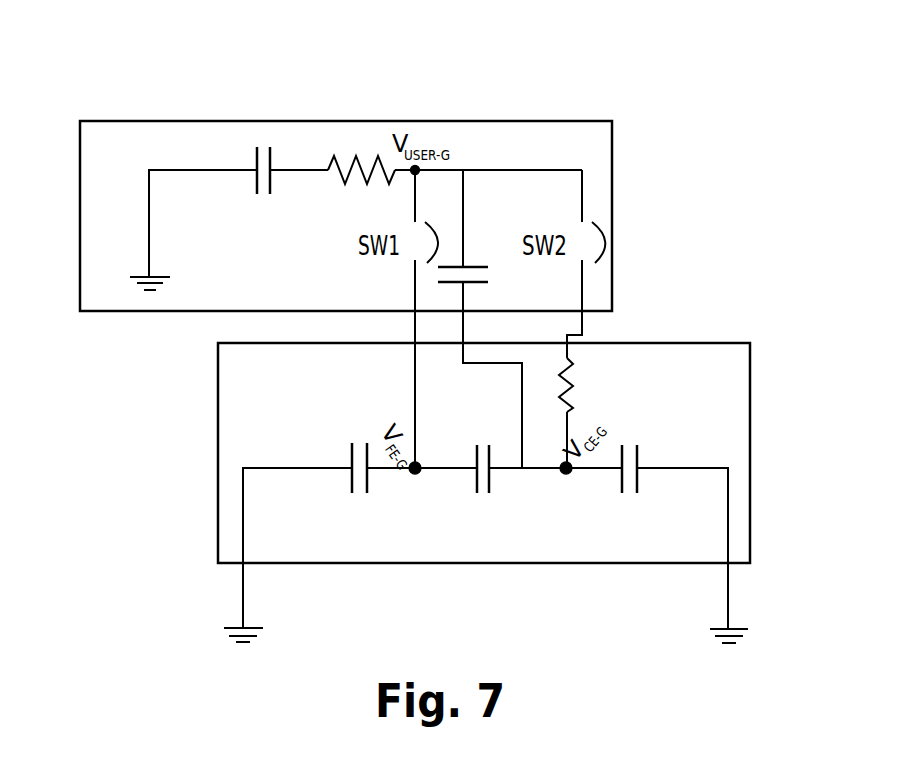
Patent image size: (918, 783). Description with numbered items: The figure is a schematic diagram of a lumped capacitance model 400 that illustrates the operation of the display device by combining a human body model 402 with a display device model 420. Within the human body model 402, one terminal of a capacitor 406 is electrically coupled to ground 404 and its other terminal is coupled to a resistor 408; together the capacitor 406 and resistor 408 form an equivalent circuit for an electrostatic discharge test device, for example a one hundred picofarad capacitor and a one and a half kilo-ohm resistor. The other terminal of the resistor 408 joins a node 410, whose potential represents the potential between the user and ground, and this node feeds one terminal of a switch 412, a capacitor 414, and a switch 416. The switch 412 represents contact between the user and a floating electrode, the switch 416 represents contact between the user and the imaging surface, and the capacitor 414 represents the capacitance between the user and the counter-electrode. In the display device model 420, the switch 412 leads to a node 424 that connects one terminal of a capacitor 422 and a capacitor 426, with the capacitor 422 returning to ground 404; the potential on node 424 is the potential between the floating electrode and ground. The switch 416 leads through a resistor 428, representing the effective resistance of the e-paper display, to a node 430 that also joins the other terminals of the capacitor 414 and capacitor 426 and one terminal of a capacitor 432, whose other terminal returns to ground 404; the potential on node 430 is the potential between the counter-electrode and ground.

The lumped capacitance model 400 is at (513, 60).
The human body model 402 is at (178, 121).
The ground 404 is at (145, 276).
The capacitor 406 is at (256, 163).
The resistor 408 is at (333, 167).
The node 410 is at (418, 174).
The switch (SW1) 412 is at (440, 237).
The capacitor (C_USER-CE) 414 is at (482, 267).
The switch (SW2) 416 is at (594, 225).
The display device model 420 is at (218, 427).
The capacitor (C_FE-G) 422 is at (351, 457).
The node 424 is at (420, 463).
The capacitor (C_FE-CE) 426 is at (473, 456).
The resistor (R_DISPLAY) 428 is at (573, 378).
The node 430 is at (566, 474).
The capacitor (C_CE-G) 432 is at (640, 457).